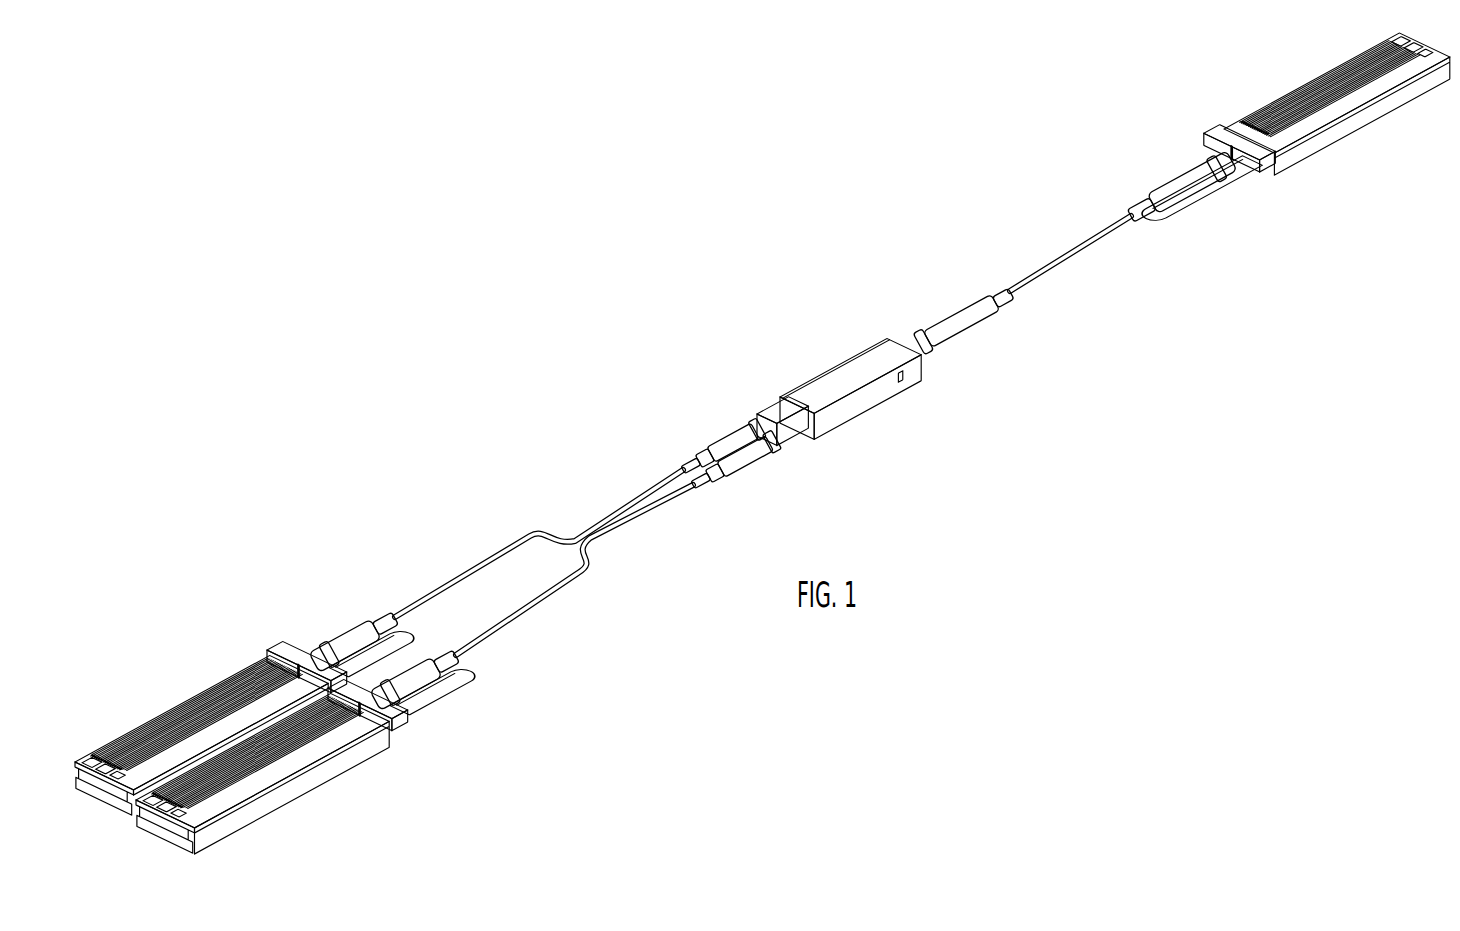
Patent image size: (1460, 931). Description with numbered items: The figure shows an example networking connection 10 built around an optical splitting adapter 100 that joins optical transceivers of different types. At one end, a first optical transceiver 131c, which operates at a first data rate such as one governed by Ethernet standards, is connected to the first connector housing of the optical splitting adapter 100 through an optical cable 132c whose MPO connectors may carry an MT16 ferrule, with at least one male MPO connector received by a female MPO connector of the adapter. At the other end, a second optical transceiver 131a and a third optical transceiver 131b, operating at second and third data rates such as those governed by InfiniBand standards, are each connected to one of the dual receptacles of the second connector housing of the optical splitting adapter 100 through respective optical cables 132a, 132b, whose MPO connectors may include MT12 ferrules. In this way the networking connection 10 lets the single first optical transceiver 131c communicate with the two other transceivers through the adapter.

The networking connection 10 is at (507, 446).
The optical splitting adapter 100 is at (860, 398).
The second optical transceiver 131a is at (236, 697).
The third optical transceiver 131b is at (305, 760).
The first optical transceiver 131c is at (1332, 128).
The optical cable 132a is at (470, 572).
The optical cable 132b is at (490, 632).
The optical cable 132c is at (1034, 282).